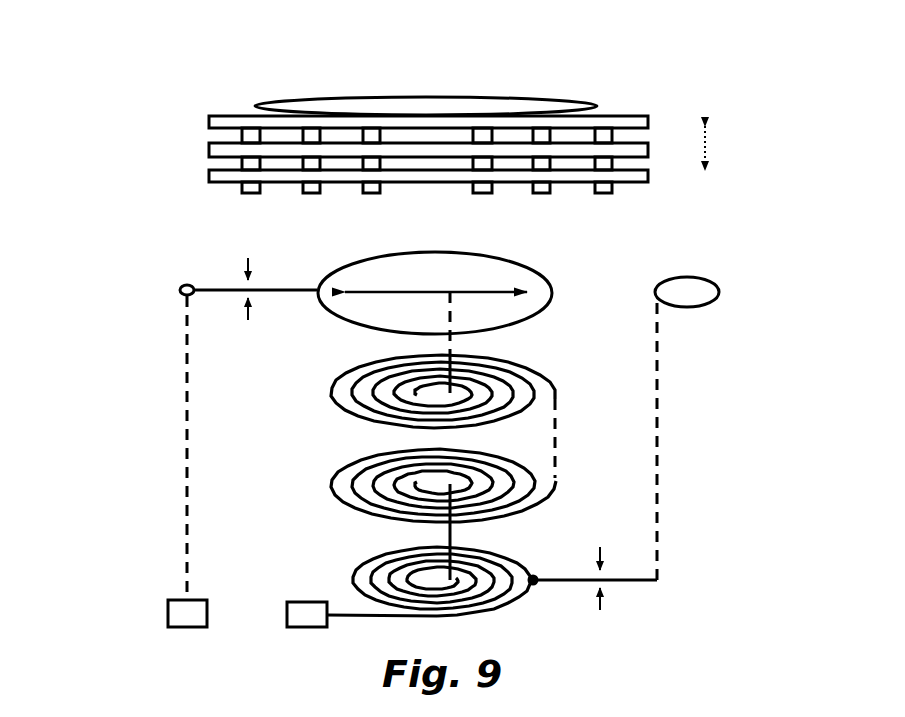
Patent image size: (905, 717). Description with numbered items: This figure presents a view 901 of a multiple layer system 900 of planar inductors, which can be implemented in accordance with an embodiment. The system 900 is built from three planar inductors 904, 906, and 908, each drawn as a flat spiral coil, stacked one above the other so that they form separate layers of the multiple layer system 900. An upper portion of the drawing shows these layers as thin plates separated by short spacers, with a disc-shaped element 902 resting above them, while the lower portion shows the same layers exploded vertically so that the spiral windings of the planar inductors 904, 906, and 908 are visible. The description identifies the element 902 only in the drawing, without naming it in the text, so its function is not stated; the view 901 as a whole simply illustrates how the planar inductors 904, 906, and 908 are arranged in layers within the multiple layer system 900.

The multiple layer system 900 is at (178, 90).
The view 901 is at (166, 468).
The top plate / disc 902 is at (537, 98).
The planar inductor 904 is at (648, 118).
The planar inductor 906 is at (648, 150).
The planar inductor 908 is at (648, 176).